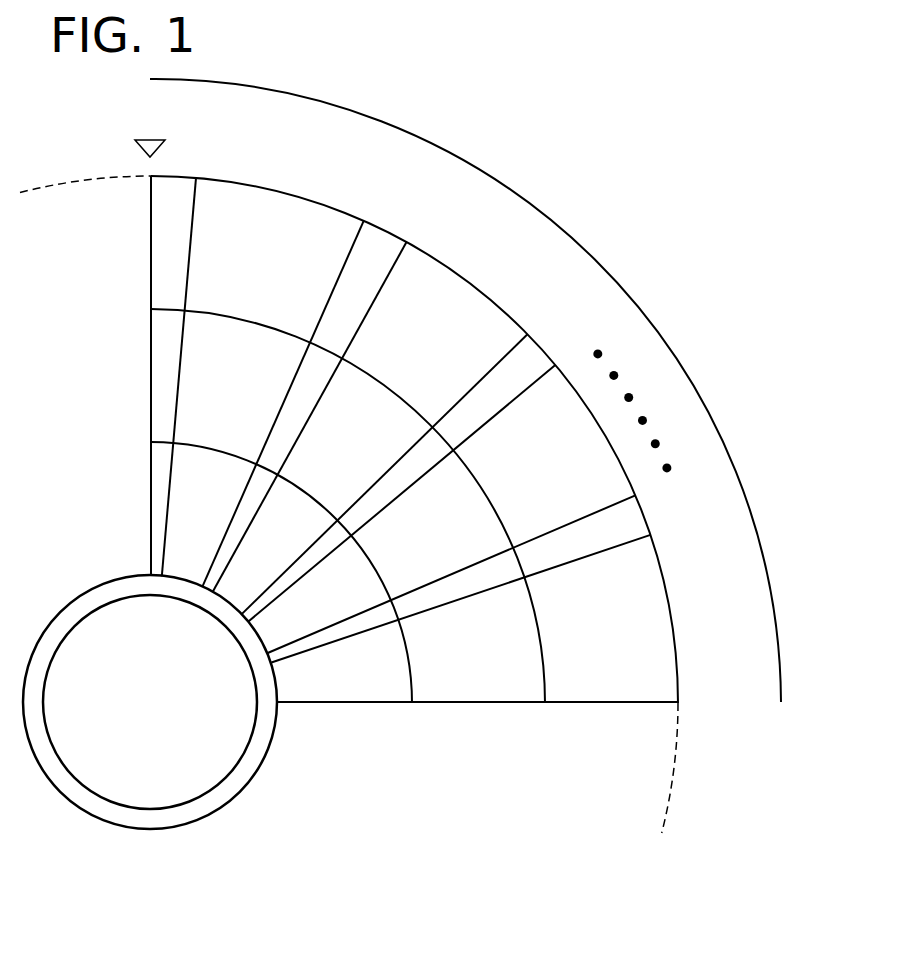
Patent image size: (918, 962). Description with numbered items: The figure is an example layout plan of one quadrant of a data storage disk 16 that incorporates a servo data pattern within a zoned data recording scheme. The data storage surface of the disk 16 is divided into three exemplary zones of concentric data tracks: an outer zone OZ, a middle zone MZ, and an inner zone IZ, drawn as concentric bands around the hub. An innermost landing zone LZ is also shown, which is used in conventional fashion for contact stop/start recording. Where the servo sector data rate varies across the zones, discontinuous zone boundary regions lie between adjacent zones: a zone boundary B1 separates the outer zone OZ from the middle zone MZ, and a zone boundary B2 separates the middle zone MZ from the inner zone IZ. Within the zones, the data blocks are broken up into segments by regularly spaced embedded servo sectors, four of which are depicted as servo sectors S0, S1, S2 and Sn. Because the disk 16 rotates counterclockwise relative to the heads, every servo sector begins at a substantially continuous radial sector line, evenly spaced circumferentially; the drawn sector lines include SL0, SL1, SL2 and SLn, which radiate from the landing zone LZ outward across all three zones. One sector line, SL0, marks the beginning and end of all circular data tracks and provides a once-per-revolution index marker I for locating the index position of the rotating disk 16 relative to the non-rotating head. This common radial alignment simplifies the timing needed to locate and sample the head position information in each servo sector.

The index marker I is at (151, 140).
The data storage disk 16 is at (675, 615).
The servo sector S0 is at (177, 188).
The servo sector S1 is at (377, 242).
The servo sector S2 is at (533, 355).
The servo sector Sn is at (635, 515).
The sector line SL0 is at (150, 272).
The sector line SL1 is at (325, 300).
The sector line SL2 is at (480, 378).
The sector line SLn is at (578, 517).
The inner zone IZ is at (365, 673).
The middle zone MZ is at (480, 670).
The outer zone OZ is at (603, 673).
The zone boundary B1 is at (545, 703).
The zone boundary B2 is at (412, 703).
The landing zone LZ is at (257, 752).